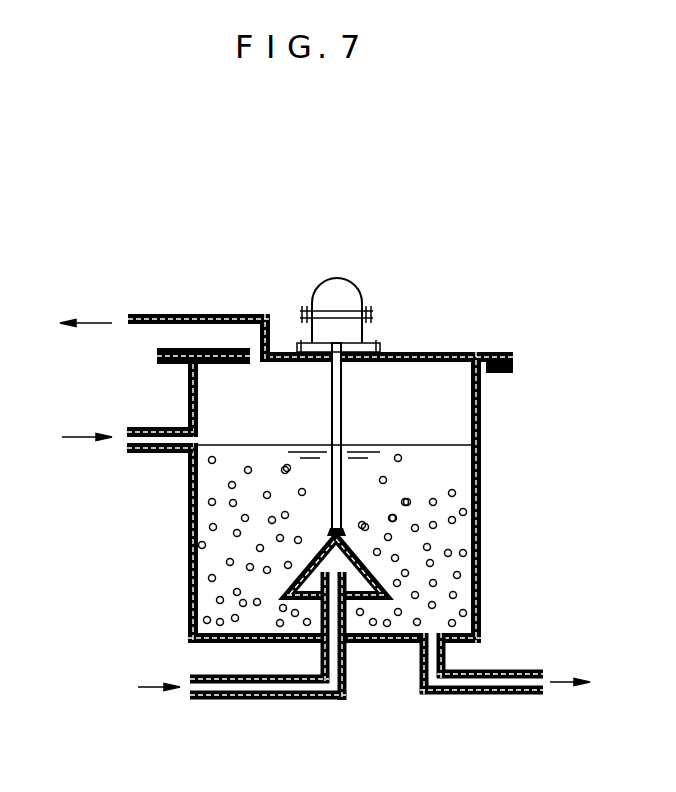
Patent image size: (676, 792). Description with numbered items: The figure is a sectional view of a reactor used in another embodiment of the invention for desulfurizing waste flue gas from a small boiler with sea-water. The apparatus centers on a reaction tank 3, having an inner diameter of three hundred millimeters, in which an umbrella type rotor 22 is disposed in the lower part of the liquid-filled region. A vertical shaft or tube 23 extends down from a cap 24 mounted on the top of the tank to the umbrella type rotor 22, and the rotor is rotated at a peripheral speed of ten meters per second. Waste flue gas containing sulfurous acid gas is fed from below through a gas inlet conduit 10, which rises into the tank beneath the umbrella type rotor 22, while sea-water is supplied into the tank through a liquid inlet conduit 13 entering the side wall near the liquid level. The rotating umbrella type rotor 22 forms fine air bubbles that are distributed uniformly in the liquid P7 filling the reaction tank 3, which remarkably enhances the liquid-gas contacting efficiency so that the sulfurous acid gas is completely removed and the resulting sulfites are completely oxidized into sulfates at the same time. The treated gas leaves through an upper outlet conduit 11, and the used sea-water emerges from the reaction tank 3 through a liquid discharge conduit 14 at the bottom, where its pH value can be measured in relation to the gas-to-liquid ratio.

The reaction tank 3 is at (481, 407).
The gas inlet conduit 10 is at (275, 700).
The outlet pipe 11 is at (200, 314).
The liquid inlet conduit 13 is at (139, 427).
The liquid discharge conduit 14 is at (463, 695).
The umbrella type rotor 22 is at (345, 545).
The central tube 23 is at (343, 400).
The dome cap 24 is at (360, 291).
The pulp suspension P7 is at (463, 510).